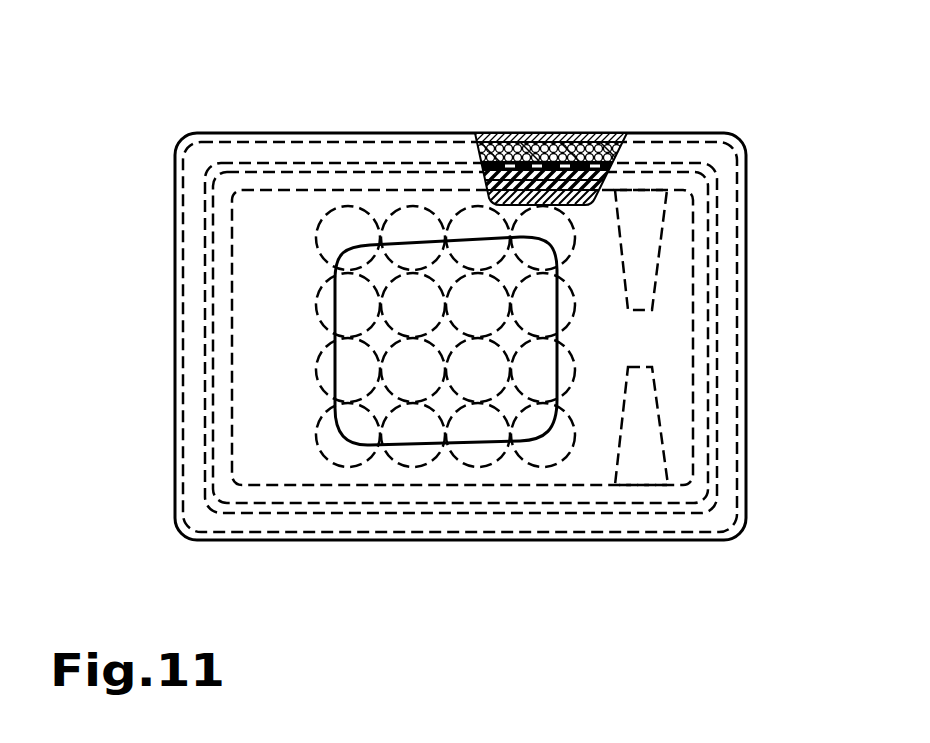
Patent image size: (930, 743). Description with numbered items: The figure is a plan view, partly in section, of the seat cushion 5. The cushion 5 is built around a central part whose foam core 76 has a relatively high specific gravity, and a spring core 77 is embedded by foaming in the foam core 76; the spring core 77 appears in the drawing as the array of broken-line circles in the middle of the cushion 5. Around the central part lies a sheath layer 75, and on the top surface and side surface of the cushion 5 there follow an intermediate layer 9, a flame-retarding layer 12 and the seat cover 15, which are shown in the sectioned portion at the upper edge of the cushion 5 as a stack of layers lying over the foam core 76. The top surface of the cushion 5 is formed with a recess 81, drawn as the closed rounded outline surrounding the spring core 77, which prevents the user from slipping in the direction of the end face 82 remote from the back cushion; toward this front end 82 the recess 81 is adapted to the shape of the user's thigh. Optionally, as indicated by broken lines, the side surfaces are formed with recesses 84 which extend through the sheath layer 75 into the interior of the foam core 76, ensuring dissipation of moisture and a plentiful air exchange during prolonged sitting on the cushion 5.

The seat cushion 5 is at (738, 125).
The intermediate layer 9 is at (483, 134).
The flame-retarding layer 12 is at (515, 134).
The seat cover 15 is at (557, 134).
The sheath layer 75 is at (593, 132).
The foam core 76 is at (584, 210).
The spring core 77 is at (327, 467).
The recess 81 is at (440, 272).
The end face 82 is at (748, 390).
The recesses 84 is at (657, 224).